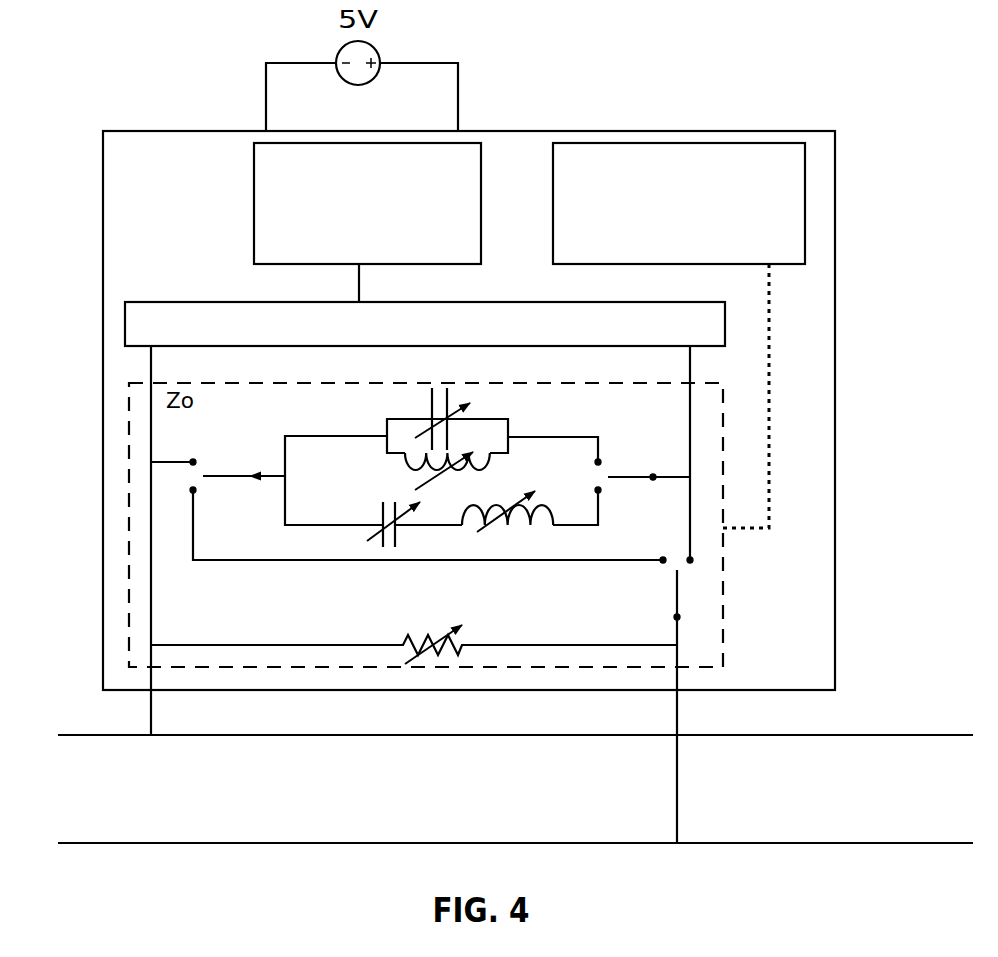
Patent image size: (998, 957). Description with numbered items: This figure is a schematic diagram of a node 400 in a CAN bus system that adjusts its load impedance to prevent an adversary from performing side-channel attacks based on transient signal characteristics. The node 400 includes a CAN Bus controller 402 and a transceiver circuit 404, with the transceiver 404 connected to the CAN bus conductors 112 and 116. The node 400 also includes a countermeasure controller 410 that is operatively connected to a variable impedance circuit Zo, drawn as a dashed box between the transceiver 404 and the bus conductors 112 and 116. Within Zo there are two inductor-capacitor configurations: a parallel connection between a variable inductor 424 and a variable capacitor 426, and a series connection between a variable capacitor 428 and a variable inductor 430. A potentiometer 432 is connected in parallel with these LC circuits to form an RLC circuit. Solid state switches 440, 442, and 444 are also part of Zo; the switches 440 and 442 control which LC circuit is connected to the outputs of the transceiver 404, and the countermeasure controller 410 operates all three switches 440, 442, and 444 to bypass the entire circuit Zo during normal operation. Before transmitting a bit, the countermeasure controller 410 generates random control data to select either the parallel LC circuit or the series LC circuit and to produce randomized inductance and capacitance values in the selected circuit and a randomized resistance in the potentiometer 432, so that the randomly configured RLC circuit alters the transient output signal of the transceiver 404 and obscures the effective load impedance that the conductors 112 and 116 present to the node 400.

The node 400 is at (103, 198).
The CAN Bus controller 402 is at (254, 208).
The transceiver circuit (TxRx) 404 is at (205, 302).
The countermeasure controller 410 is at (553, 213).
The variable inductor 424 is at (492, 468).
The variable capacitor 426 is at (447, 400).
The variable capacitor 428 is at (383, 540).
The variable inductor 430 is at (553, 526).
The potentiometer 432 is at (403, 640).
The switch 440 is at (230, 443).
The switch 442 is at (635, 448).
The switch 444 is at (660, 573).
The CAN bus conductor 112 is at (750, 737).
The CAN bus conductor 116 is at (755, 845).